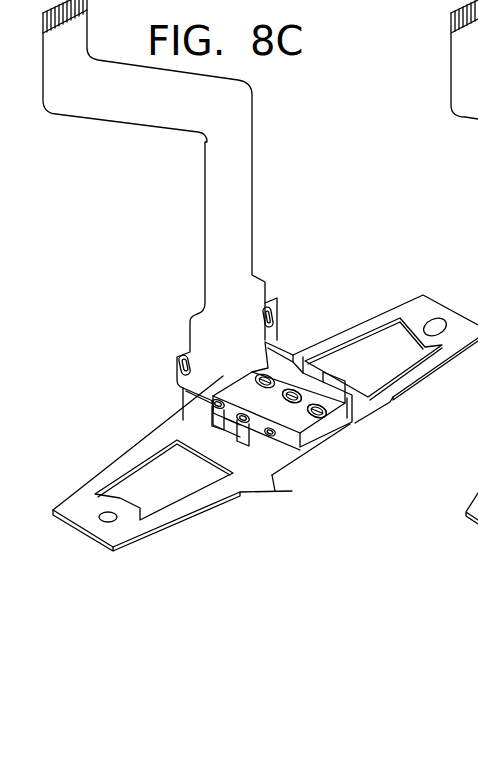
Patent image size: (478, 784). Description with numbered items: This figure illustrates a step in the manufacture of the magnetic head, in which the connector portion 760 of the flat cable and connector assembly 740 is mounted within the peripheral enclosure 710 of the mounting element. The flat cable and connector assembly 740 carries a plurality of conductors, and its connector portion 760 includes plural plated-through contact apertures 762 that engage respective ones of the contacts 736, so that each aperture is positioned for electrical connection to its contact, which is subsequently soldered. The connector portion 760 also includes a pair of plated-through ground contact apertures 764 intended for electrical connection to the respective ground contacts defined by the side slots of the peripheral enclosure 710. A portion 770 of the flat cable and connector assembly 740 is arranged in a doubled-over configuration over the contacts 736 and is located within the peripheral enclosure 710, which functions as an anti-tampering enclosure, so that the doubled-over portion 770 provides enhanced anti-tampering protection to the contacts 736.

The flat cable and connector assembly 740 is at (260, 218).
The connector portion 760 is at (251, 398).
The plated-through ground contact apertures 764 is at (178, 375).
The doubled-over portion 770 is at (280, 265).
The plated-through contact apertures 762 is at (212, 433).
The contacts 736 is at (291, 401).
The peripheral enclosure 710 is at (267, 452).